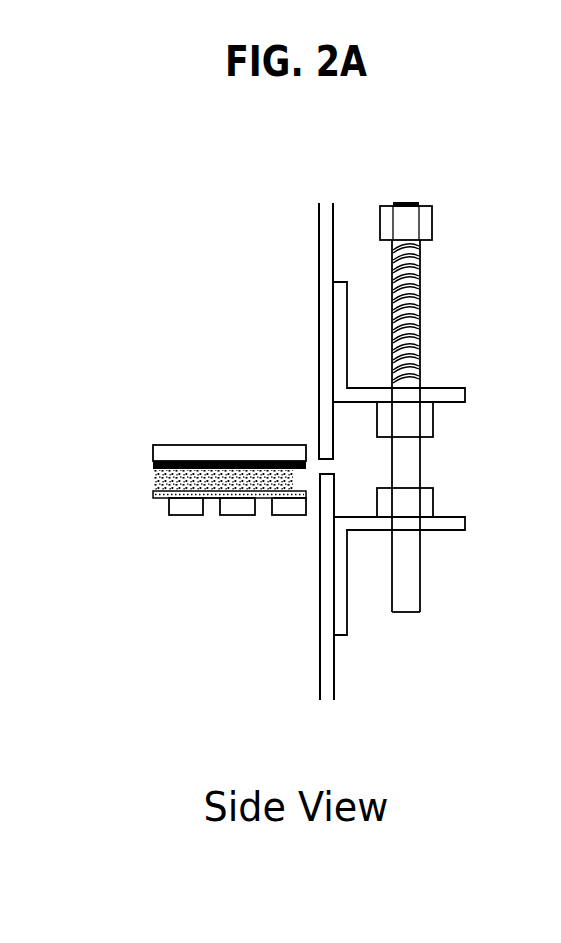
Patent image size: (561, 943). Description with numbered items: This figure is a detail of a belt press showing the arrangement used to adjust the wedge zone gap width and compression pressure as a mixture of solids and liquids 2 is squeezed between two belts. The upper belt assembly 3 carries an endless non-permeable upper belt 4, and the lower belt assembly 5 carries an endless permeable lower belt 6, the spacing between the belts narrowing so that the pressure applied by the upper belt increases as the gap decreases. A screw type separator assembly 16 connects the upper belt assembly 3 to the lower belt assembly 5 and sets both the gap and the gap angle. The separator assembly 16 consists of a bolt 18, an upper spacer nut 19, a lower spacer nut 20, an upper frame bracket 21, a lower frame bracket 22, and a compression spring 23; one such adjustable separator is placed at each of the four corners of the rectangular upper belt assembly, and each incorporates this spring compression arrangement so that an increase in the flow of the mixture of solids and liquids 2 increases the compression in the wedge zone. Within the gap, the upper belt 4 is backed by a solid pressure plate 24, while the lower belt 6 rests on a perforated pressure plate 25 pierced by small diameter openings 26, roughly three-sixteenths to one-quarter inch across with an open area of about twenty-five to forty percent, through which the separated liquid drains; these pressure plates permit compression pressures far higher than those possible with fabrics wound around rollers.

The mixture of solids and liquids 2 is at (154, 481).
The upper belt assembly 3 is at (319, 255).
The upper belt 4 is at (153, 466).
The lower belt assembly 5 is at (330, 630).
The lower belt 6 is at (153, 494).
The screw type separator assembly 16 is at (450, 371).
The bolt 18 is at (432, 228).
The upper spacer nut 19 is at (433, 430).
The lower spacer nut 20 is at (433, 492).
The upper frame bracket 21 is at (445, 390).
The lower frame bracket 22 is at (457, 530).
The compression spring 23 is at (420, 290).
The solid pressure plate 24 is at (242, 457).
The perforated pressure plate 25 is at (178, 515).
The small diameter openings 26 is at (215, 503).